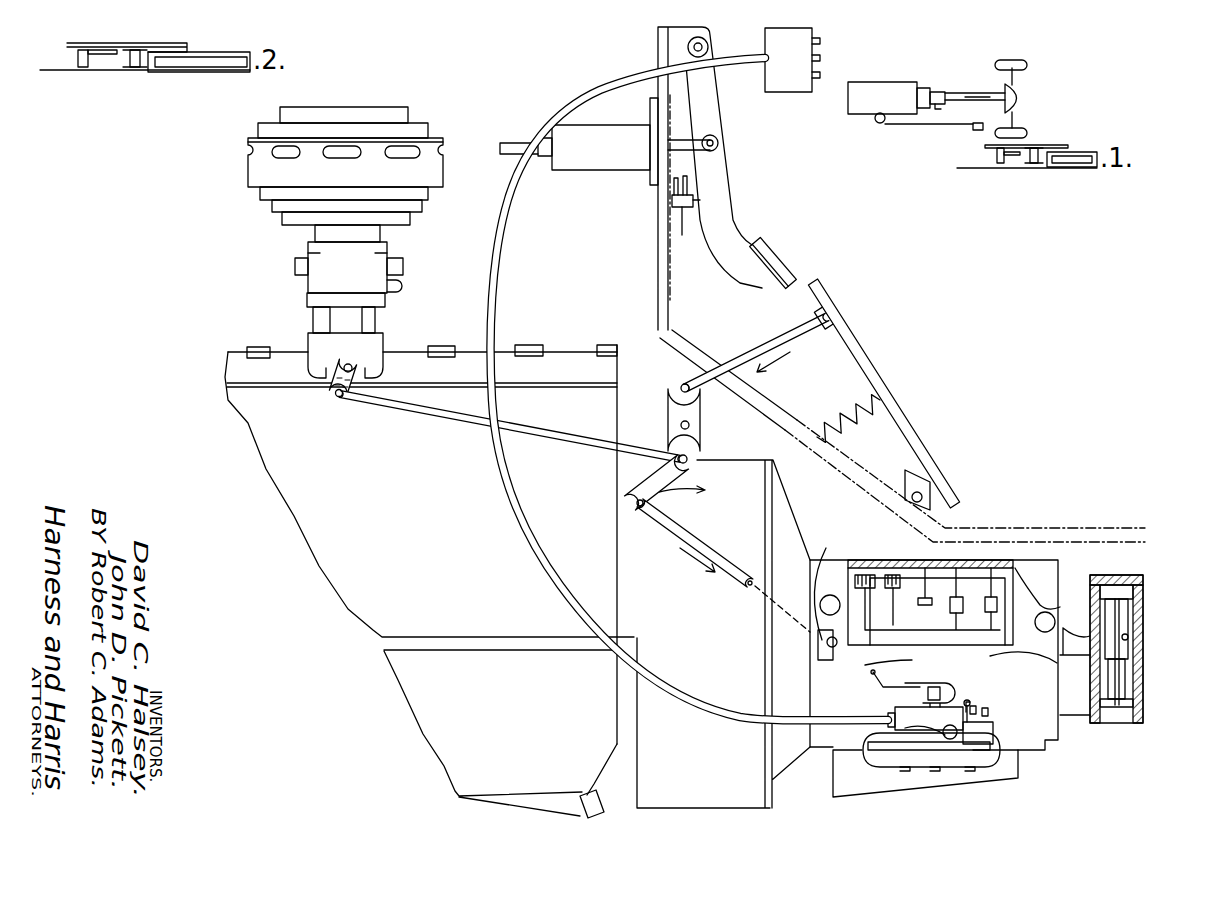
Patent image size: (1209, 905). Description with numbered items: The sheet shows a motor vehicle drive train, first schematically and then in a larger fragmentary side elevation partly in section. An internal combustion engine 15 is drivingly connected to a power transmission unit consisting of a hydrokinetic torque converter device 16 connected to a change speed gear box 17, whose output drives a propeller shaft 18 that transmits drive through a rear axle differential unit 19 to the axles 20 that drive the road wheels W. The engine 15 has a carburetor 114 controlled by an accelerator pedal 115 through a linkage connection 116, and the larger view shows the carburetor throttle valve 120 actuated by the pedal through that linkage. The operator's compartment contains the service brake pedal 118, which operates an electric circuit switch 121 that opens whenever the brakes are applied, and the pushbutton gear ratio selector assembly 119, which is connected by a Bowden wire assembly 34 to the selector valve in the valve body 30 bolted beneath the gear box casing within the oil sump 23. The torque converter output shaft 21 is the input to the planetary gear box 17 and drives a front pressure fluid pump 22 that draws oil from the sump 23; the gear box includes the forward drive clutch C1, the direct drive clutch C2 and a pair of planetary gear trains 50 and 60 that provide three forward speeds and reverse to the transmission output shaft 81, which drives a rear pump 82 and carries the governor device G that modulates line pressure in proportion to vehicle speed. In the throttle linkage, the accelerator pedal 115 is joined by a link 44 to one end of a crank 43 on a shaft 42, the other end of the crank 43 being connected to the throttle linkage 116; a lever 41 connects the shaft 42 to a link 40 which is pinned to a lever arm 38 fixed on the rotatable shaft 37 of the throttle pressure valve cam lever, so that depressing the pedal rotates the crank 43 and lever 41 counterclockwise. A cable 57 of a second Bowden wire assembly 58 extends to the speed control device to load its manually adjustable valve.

In FIG. 1, the internal combustion engine 15 is at (878, 82).
In FIG. 2, the internal combustion engine 15 is at (235, 362).
In FIG. 1, the torque converter device 16 is at (925, 88).
In FIG. 2, the torque converter device 16 is at (717, 473).
In FIG. 1, the change speed gear box 17 is at (948, 93).
In FIG. 2, the change speed gear box 17 is at (987, 560).
In FIG. 1, the propeller shaft 18 is at (969, 108).
In FIG. 1, the rear axle differential unit 19 is at (1018, 98).
In FIG. 1, the axles 20 is at (1016, 81).
In FIG. 1, the road wheels W is at (1028, 64).
In FIG. 1, the carburetor 114 is at (877, 122).
In FIG. 2, the carburetor 114 is at (248, 174).
In FIG. 1, the accelerator pedal 115 is at (975, 131).
In FIG. 2, the accelerator pedal 115 is at (857, 338).
In FIG. 1, the linkage connection 116 is at (935, 128).
In FIG. 2, the linkage connection 116 is at (437, 415).
In FIG. 2, the service brake pedal 118 is at (722, 207).
In FIG. 2, the pushbutton assembly 119 is at (795, 92).
In FIG. 2, the carburetor throttle valve 120 is at (372, 358).
In FIG. 2, the electric circuit switch 121 is at (684, 212).
In FIG. 2, the Bowden wire assembly 34 is at (498, 266).
In FIG. 2, the link 44 is at (772, 347).
In FIG. 2, the crank 43 is at (670, 403).
In FIG. 2, the shaft 42 is at (696, 431).
In FIG. 2, the lever 41 is at (641, 471).
In FIG. 2, the link 40 is at (735, 584).
In FIG. 2, the pressure fluid pump 22 is at (827, 586).
In FIG. 2, the forward drive clutch C1 is at (866, 575).
In FIG. 2, the direct drive clutch C2 is at (893, 575).
In FIG. 2, the planetary gear train 50 is at (950, 606).
In FIG. 2, the rear pump 82 is at (1045, 612).
In FIG. 2, the governor device G is at (1123, 590).
In FIG. 2, the transmission output shaft 81 is at (1128, 637).
In FIG. 2, the torque converter output shaft 21 is at (817, 655).
In FIG. 2, the valve body 30 is at (884, 711).
In FIG. 2, the lever arm 38 is at (932, 683).
In FIG. 2, the planetary gear train 60 is at (933, 660).
In FIG. 2, the rotatable shaft 37 is at (968, 700).
In FIG. 2, the Bowden wire assembly 58 is at (988, 708).
In FIG. 2, the cable 57 is at (993, 731).
In FIG. 2, the sump 23 is at (912, 784).